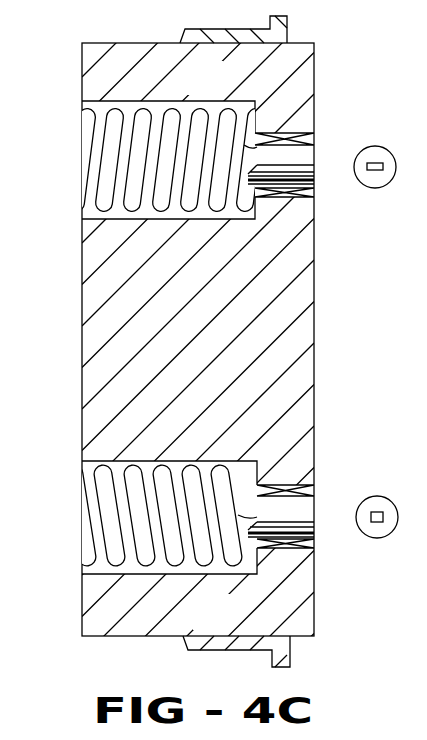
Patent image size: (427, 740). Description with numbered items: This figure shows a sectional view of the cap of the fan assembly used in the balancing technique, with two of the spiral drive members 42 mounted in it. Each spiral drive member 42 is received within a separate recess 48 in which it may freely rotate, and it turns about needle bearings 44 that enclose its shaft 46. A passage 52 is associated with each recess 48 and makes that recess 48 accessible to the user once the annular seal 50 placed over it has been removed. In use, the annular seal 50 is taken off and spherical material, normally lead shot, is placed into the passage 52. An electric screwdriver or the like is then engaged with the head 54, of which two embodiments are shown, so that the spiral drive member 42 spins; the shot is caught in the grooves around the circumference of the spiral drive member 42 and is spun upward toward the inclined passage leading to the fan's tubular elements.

The spiral drive member 42 is at (82, 158).
The needle bearings 44 is at (313, 120).
The shaft 46 is at (308, 172).
The recess 48 is at (82, 218).
The annular seal 50 is at (183, 33).
The passage 52 is at (218, 90).
The head 54 is at (381, 149).